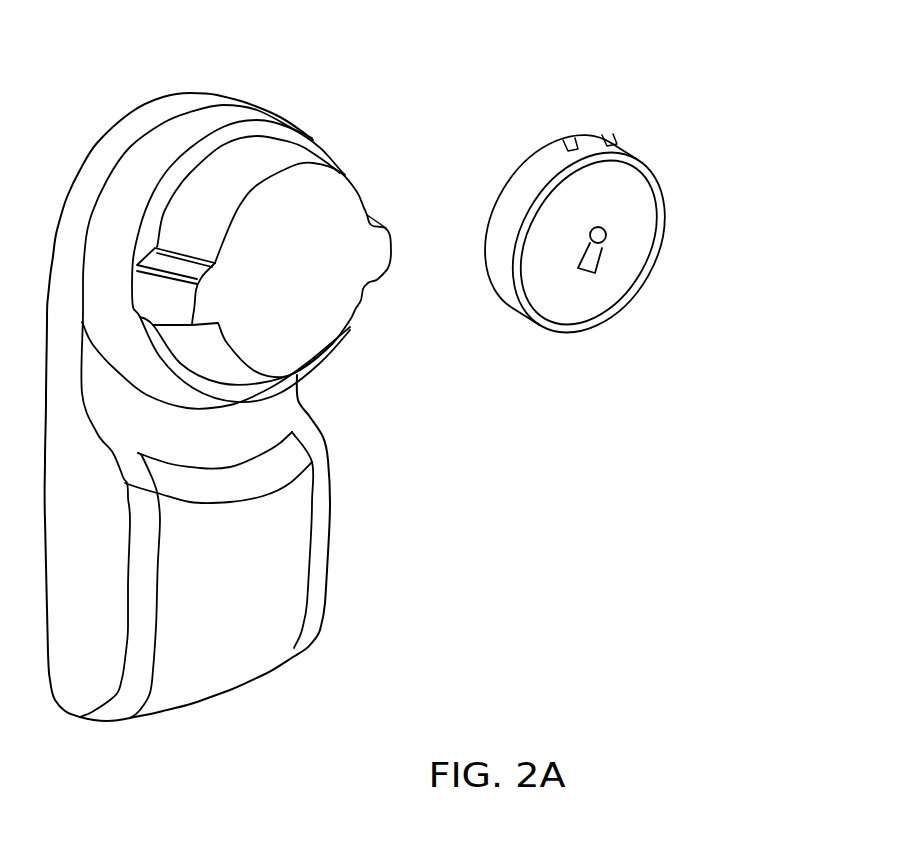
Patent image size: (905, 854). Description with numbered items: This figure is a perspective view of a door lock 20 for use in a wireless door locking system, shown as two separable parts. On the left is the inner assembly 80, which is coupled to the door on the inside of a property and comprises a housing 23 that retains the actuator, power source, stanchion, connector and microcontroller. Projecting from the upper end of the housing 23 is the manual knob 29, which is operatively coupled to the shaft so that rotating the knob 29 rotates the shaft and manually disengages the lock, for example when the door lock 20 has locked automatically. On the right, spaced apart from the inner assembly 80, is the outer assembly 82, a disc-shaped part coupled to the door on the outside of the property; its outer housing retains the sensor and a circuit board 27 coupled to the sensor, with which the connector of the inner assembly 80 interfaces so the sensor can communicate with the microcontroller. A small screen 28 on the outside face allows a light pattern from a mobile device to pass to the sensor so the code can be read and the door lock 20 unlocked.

The door lock 20 is at (818, 80).
The housing 23 is at (235, 443).
The circuit board 27 is at (640, 215).
The small screen 28 is at (593, 252).
The manual knob 29 is at (288, 343).
The inner assembly 80 is at (448, 448).
The outer assembly 82 is at (614, 352).